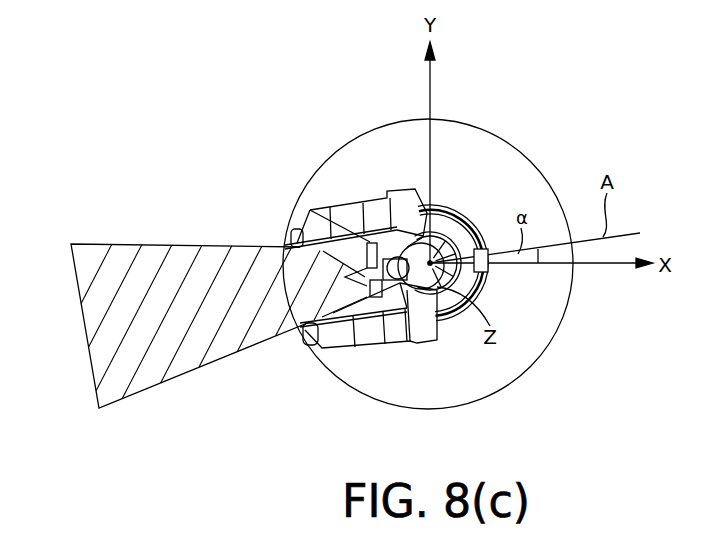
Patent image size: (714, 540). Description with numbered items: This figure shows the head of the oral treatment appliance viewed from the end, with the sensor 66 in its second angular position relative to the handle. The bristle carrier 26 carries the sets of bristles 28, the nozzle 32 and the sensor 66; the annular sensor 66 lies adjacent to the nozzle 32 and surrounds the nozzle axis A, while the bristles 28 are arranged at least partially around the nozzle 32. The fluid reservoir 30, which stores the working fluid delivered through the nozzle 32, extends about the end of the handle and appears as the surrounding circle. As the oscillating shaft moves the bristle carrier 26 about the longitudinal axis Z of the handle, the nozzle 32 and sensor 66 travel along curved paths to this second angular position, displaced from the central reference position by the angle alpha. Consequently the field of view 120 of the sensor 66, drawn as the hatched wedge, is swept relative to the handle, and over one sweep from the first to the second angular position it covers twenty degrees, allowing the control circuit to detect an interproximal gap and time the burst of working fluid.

The field of view 120 is at (153, 263).
The bristle carrier 26 is at (408, 198).
The sensor 66 is at (310, 210).
The fluid reservoir 30 is at (523, 180).
The bristles 28 is at (345, 338).
The nozzle 32 is at (400, 283).